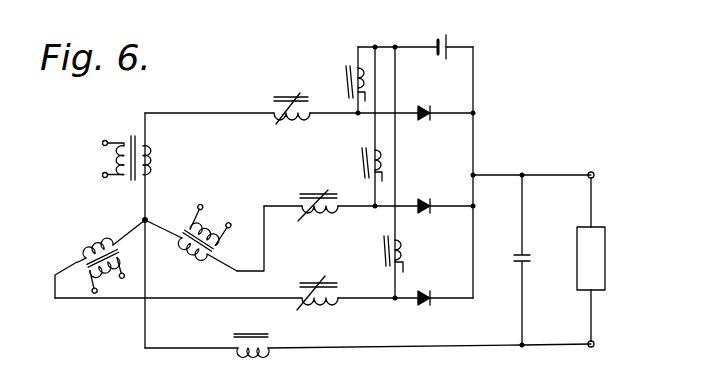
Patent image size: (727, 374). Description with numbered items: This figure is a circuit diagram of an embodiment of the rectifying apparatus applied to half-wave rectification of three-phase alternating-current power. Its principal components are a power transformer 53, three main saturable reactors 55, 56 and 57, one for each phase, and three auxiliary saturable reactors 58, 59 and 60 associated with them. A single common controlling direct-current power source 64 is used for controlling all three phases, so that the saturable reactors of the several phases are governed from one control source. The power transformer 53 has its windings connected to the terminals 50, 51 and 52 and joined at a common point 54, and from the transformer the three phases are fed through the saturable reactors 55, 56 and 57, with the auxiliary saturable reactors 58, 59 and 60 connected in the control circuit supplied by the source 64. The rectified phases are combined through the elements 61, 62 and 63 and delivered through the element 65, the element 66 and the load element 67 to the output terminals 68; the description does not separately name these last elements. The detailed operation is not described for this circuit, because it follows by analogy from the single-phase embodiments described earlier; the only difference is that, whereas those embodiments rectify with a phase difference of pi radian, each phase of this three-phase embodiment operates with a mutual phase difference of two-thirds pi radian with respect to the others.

The input terminals 50 is at (99, 161).
The output terminals of first winding 51 is at (96, 293).
The output terminals of second winding 52 is at (214, 212).
The power transformer 53 is at (131, 181).
The junction of transformer windings 54 is at (163, 232).
The saturable reactor 55 is at (286, 100).
The saturable reactor 56 is at (314, 195).
The saturable reactor 57 is at (314, 283).
The auxiliary saturable reactor 58 is at (347, 70).
The auxiliary saturable reactor 59 is at (362, 149).
The auxiliary saturable reactor 60 is at (384, 257).
The rectifier diode 61 is at (424, 105).
The rectifier diode 62 is at (424, 198).
The rectifier diode 63 is at (426, 290).
The common controlling D.C. power source 64 is at (436, 40).
The inductor 65 is at (254, 332).
The filter capacitor 66 is at (518, 258).
The load resistor 67 is at (606, 243).
The output terminals 68 is at (592, 254).